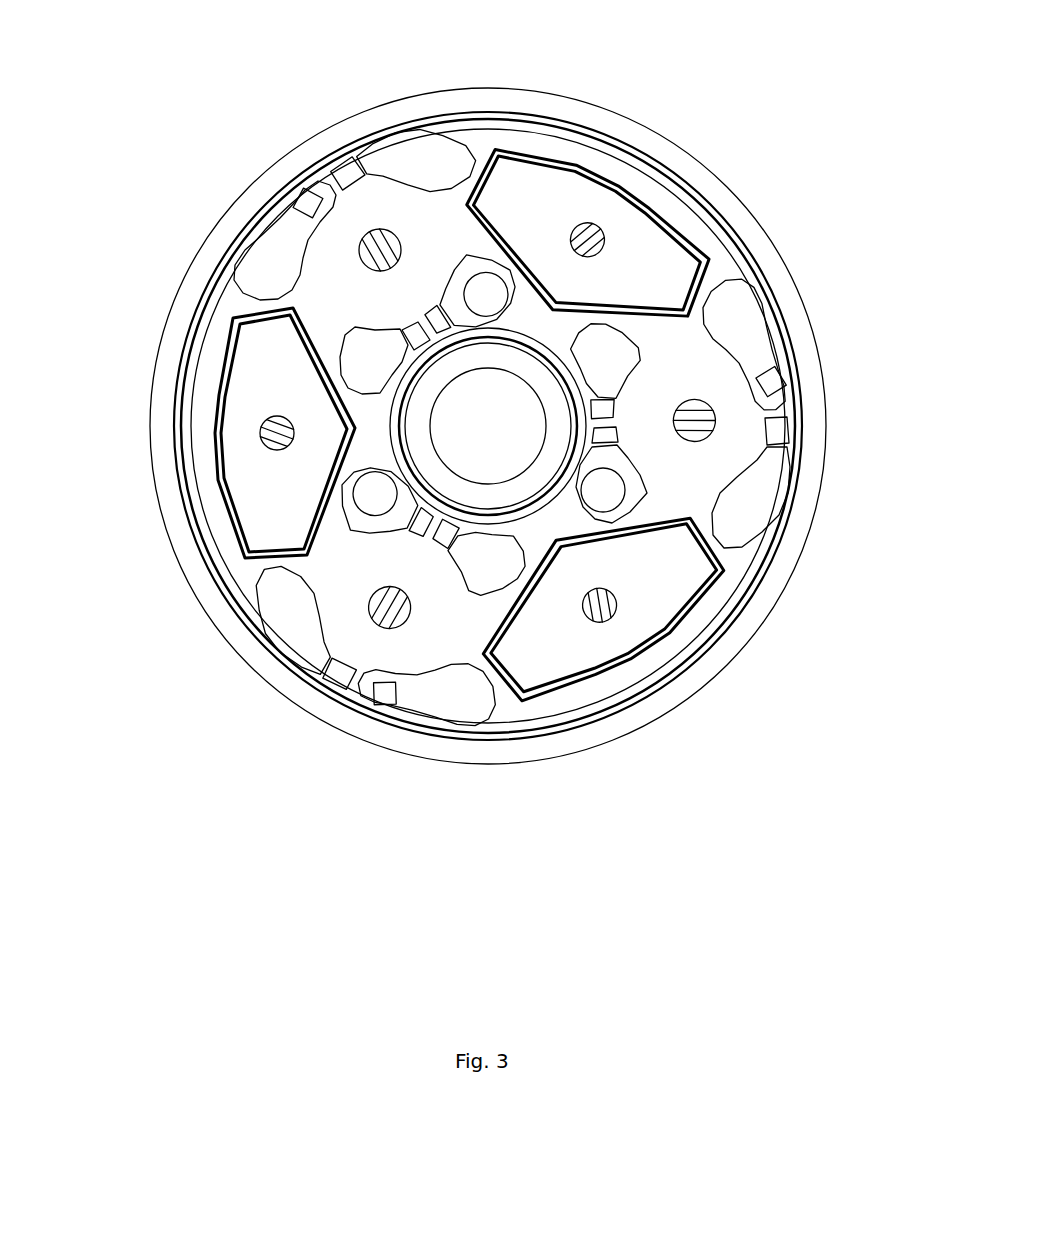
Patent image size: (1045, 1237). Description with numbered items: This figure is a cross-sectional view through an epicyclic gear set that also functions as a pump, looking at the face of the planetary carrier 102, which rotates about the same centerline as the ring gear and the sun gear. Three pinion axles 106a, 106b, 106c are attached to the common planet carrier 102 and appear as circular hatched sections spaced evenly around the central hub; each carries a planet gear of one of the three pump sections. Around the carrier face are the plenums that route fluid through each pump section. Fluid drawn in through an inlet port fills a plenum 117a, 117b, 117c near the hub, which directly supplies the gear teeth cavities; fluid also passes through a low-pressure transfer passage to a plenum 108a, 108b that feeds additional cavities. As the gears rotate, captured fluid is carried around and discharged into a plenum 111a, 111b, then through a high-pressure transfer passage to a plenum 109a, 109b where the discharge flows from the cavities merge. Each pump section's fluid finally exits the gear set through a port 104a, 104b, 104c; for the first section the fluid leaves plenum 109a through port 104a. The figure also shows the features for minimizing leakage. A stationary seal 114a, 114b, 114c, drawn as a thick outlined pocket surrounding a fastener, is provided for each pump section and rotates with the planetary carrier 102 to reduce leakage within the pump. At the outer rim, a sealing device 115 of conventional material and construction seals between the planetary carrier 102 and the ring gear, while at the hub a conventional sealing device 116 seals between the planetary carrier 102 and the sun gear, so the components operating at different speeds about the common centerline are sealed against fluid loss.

The planetary carrier 102 is at (308, 152).
The sealing device 115 is at (563, 113).
The sealing device 116 is at (606, 455).
The port 104a is at (368, 494).
The port 104b is at (770, 428).
The port 104c is at (485, 295).
The pinion axle 106a is at (377, 250).
The pinion axle 106b is at (385, 607).
The pinion axle 106c is at (697, 417).
The plenum 108a is at (287, 615).
The plenum 108b is at (757, 513).
The plenum 109a is at (368, 498).
The plenum 109b is at (604, 490).
The plenum 111a is at (275, 257).
The plenum 111b is at (437, 697).
The stationary seal 114a is at (221, 490).
The stationary seal 114b is at (617, 663).
The stationary seal 114c is at (653, 210).
The plenum 117a is at (362, 367).
The plenum 117b is at (497, 562).
The plenum 117c is at (608, 350).